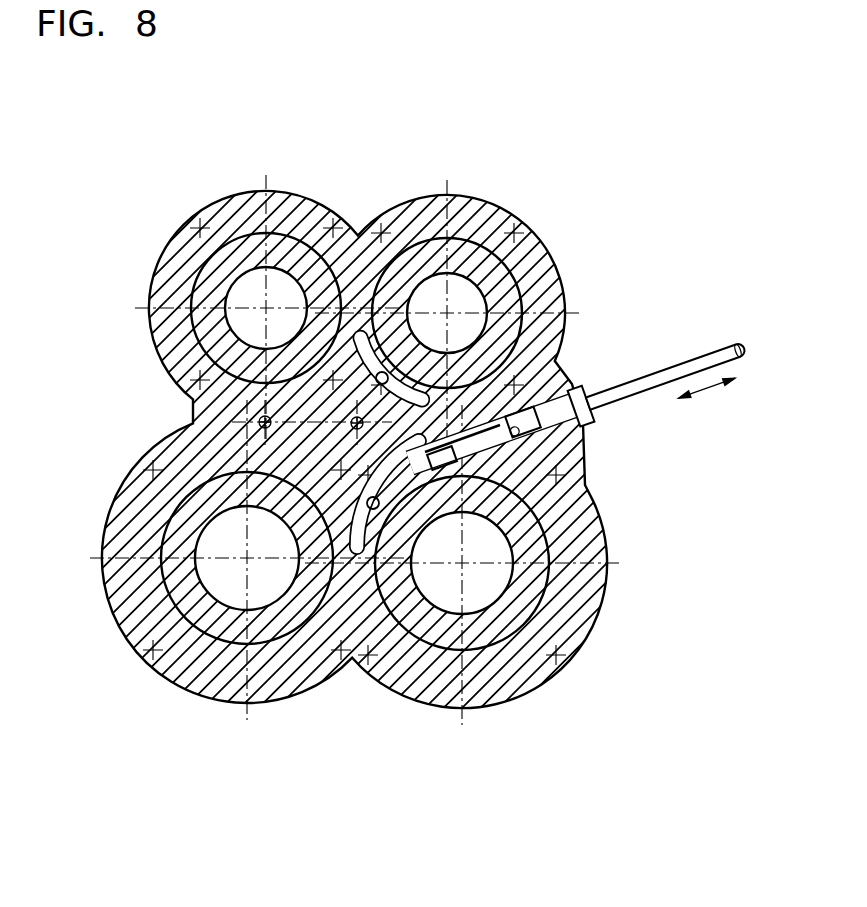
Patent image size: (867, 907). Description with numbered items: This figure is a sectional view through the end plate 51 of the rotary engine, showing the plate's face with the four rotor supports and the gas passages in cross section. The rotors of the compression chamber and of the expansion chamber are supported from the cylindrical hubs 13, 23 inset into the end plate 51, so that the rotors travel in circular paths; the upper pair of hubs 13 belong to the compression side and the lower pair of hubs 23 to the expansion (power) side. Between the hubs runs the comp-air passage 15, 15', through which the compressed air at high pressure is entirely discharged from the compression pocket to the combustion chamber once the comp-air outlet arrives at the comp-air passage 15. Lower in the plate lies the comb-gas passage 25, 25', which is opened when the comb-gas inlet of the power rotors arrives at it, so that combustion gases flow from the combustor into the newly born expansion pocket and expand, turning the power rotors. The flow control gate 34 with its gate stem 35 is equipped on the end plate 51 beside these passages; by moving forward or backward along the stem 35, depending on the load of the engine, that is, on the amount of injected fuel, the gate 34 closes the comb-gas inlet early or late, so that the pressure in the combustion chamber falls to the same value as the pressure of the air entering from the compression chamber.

The cylindrical hub 13 is at (304, 210).
The end plate 51 is at (507, 192).
The cylindrical hub 23 is at (504, 662).
The flow control gate 34 is at (593, 590).
The gate stem 35 is at (648, 353).
The comb-gas passage 25 is at (224, 451).
The comb-gas passage 25' is at (228, 423).
The comp-air passage 15 is at (340, 383).
The comp-air passage 15' is at (332, 413).